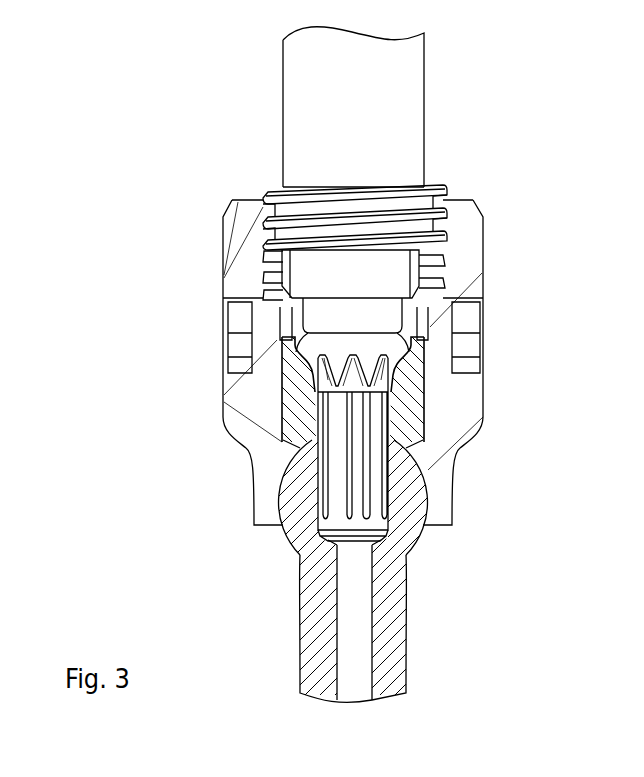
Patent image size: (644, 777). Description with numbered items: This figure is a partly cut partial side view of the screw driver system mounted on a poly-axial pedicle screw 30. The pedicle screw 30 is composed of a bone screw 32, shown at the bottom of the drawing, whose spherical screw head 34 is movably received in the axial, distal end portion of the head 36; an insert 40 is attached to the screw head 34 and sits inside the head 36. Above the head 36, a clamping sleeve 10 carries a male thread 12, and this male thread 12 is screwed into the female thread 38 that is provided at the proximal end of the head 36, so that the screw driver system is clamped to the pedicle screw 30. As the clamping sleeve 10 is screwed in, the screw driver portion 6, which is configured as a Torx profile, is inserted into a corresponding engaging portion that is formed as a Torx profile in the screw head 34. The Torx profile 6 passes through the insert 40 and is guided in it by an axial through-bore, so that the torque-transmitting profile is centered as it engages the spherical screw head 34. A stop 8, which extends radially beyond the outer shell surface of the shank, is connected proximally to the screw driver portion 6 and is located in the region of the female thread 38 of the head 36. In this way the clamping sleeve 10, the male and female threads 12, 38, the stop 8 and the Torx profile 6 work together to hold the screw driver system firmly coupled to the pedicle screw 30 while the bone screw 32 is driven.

The clamping sleeve 10 is at (283, 78).
The male thread 12 is at (413, 207).
The head 36 is at (484, 243).
The female thread 38 is at (262, 277).
The stop 8 is at (287, 298).
The insert 40 is at (415, 398).
The screw driver portion 6 is at (321, 435).
The spherical screw head 34 is at (304, 497).
The poly-axial pedicle screw 30 is at (497, 580).
The bone screw 32 is at (294, 661).